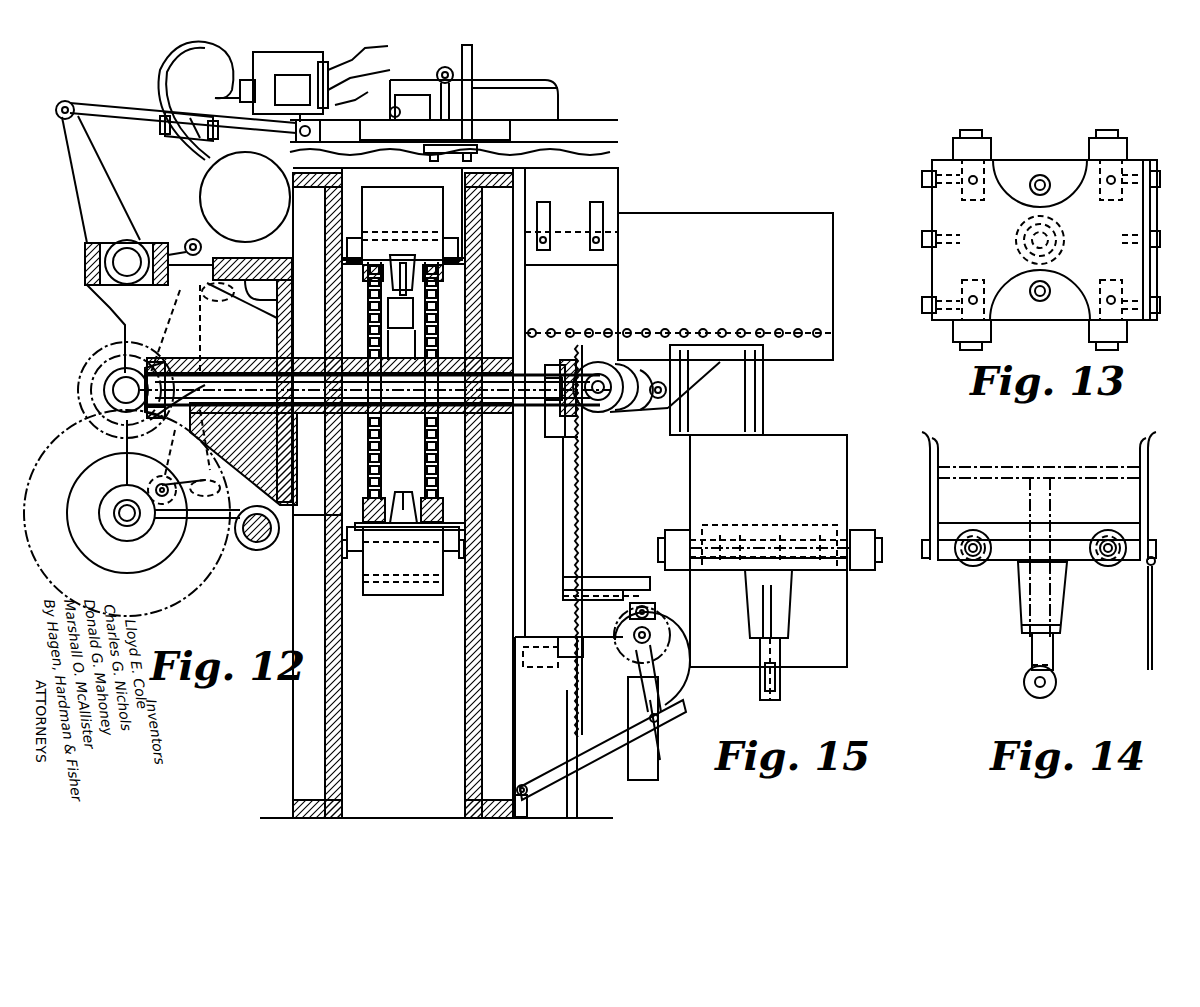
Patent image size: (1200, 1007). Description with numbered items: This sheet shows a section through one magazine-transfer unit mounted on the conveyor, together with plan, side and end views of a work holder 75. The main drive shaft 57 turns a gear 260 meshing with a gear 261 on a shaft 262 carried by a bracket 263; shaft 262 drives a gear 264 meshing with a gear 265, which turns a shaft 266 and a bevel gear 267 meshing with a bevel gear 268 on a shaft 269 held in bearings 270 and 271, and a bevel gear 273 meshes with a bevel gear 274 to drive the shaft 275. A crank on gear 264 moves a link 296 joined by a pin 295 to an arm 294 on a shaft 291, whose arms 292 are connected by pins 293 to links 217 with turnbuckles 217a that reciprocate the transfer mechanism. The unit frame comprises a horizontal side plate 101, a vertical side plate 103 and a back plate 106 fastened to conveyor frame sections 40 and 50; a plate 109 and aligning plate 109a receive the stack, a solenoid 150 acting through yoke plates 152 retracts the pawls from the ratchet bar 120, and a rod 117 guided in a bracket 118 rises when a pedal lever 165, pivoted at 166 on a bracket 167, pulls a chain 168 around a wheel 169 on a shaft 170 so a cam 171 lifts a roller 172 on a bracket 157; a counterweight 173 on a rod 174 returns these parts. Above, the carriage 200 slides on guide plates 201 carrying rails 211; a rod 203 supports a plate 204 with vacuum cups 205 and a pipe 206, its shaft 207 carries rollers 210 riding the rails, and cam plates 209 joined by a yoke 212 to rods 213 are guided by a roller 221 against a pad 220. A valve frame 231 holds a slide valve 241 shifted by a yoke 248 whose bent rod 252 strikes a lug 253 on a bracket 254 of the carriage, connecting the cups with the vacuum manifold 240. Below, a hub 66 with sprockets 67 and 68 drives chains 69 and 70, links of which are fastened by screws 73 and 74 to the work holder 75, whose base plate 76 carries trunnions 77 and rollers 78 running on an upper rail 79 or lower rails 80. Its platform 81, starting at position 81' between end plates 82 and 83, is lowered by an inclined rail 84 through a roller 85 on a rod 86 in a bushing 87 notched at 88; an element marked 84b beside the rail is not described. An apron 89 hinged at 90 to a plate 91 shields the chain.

In FIG. 12, the pin 293 is at (65, 101).
In FIG. 12, the link 217 is at (133, 110).
In FIG. 12, the turnbuckle 217a is at (192, 113).
In FIG. 12, the frame 231 is at (262, 55).
In FIG. 12, the yoke 248 is at (303, 45).
In FIG. 12, the slide valve 241 is at (276, 67).
In FIG. 12, the bent rod 252 is at (365, 60).
In FIG. 12, the lug 253 is at (365, 80).
In FIG. 12, the bracket 254 is at (390, 112).
In FIG. 12, the roller 221 is at (418, 104).
In FIG. 12, the rollers 210 is at (445, 67).
In FIG. 12, the pipe 206 is at (472, 55).
In FIG. 12, the cam plates 209 is at (475, 86).
In FIG. 12, the rails 211 is at (558, 88).
In FIG. 12, the rod 203 is at (470, 96).
In FIG. 12, the carriage plate 200 is at (500, 120).
In FIG. 12, the guide plates 201 is at (590, 122).
In FIG. 12, the pad 220 is at (395, 129).
In FIG. 12, the rods 213 is at (350, 140).
In FIG. 12, the vacuum cups 205 is at (425, 150).
In FIG. 12, the plate 204 is at (477, 149).
In FIG. 12, the back plate 106 is at (522, 190).
In FIG. 12, the side plate 101 is at (610, 175).
In FIG. 12, the arm 292 is at (75, 170).
In FIG. 12, the vacuum manifold 240 is at (200, 178).
In FIG. 12, the arm 294 is at (185, 240).
In FIG. 12, the pin 295 is at (201, 247).
In FIG. 12, the shaft 291 is at (118, 260).
In FIG. 12, the bracket 263 is at (103, 300).
In FIG. 12, the link 296 is at (220, 292).
In FIG. 12, the shaft 269 is at (240, 330).
In FIG. 12, the bevel gear 268 is at (158, 355).
In FIG. 12, the gear 265 is at (88, 342).
In FIG. 12, the bearing 270 is at (210, 358).
In FIG. 12, the housing 84b is at (350, 305).
In FIG. 12, the work holder 75 is at (415, 190).
In FIG. 13, the work holder 75 is at (1060, 106).
In FIG. 12, the roller 78 is at (355, 238).
In FIG. 15, the roller 78 is at (866, 578).
In FIG. 13, the roller 78 is at (953, 146).
In FIG. 14, the roller 78 is at (960, 565).
In FIG. 12, the conveyor chain 69 is at (374, 247).
In FIG. 12, the conveyor chain 70 is at (424, 247).
In FIG. 12, the upper rail 79 is at (415, 300).
In FIG. 12, the rail 84 is at (415, 315).
In FIG. 12, the sprocket 68 is at (438, 338).
In FIG. 12, the side plate 103 is at (608, 272).
In FIG. 12, the bevel gear 273 is at (585, 360).
In FIG. 12, the shaft 275 is at (605, 372).
In FIG. 12, the plate 109a is at (795, 213).
In FIG. 12, the plate 109 is at (700, 385).
In FIG. 12, the solenoid 150 is at (763, 392).
In FIG. 12, the yoke plates 152 is at (645, 410).
In FIG. 12, the bevel gear 274 is at (606, 412).
In FIG. 12, the bevel gear 267 is at (90, 378).
In FIG. 12, the shaft 266 is at (112, 390).
In FIG. 12, the gear 264 is at (85, 475).
In FIG. 12, the gear 261 is at (218, 485).
In FIG. 12, the shaft 207 is at (170, 488).
In FIG. 12, the shaft 262 is at (120, 518).
In FIG. 12, the gear 260 is at (238, 545).
In FIG. 12, the main drive shaft 57 is at (257, 551).
In FIG. 12, the bearing 271 is at (309, 453).
In FIG. 12, the hub 66 is at (352, 437).
In FIG. 12, the sprocket 67 is at (368, 476).
In FIG. 12, the yoke 212 is at (470, 420).
In FIG. 12, the lower rails 80 is at (342, 567).
In FIG. 12, the ratchet bar 120 is at (584, 488).
In FIG. 12, the bracket 157 is at (633, 577).
In FIG. 12, the roller 172 is at (648, 608).
In FIG. 12, the wheel 169 is at (656, 622).
In FIG. 12, the shaft 170 is at (635, 637).
In FIG. 12, the rod 174 is at (650, 672).
In FIG. 12, the cam 171 is at (672, 683).
In FIG. 12, the rod 117 is at (568, 691).
In FIG. 12, the bracket 118 is at (608, 665).
In FIG. 12, the chain 168 is at (650, 722).
In FIG. 12, the frame section 40 is at (520, 728).
In FIG. 12, the pedal lever 165 is at (611, 752).
In FIG. 12, the pivot 166 is at (528, 792).
In FIG. 12, the bracket 167 is at (527, 814).
In FIG. 12, the counterweight 173 is at (650, 780).
In FIG. 12, the frame section 50 is at (325, 752).
In FIG. 15, the end plate 82 is at (847, 478).
In FIG. 13, the end plate 82 is at (932, 216).
In FIG. 14, the end plate 82 is at (930, 490).
In FIG. 15, the platform 81 is at (811, 513).
In FIG. 13, the platform 81 is at (1001, 322).
In FIG. 14, the platform 81 is at (1093, 512).
In FIG. 15, the trunnion 77 is at (879, 546).
In FIG. 13, the trunnion 77 is at (975, 125).
In FIG. 14, the trunnion 77 is at (973, 530).
In FIG. 15, the bushing 87 is at (795, 575).
In FIG. 14, the bushing 87 is at (1065, 572).
In FIG. 15, the bottom plate 76 is at (742, 572).
In FIG. 13, the bottom plate 76 is at (1063, 170).
In FIG. 14, the bottom plate 76 is at (1000, 562).
In FIG. 15, the notch 88 is at (775, 602).
In FIG. 14, the notch 88 is at (1025, 585).
In FIG. 15, the apron 89 is at (847, 617).
In FIG. 14, the apron 89 is at (1153, 617).
In FIG. 15, the rod 86 is at (781, 648).
In FIG. 14, the rod 86 is at (1052, 617).
In FIG. 15, the roller 85 is at (776, 676).
In FIG. 14, the roller 85 is at (1055, 678).
In FIG. 13, the screw 74 is at (1040, 175).
In FIG. 13, the end plate 83 is at (1143, 263).
In FIG. 14, the end plate 83 is at (1142, 462).
In FIG. 13, the plate 91 is at (1152, 276).
In FIG. 14, the plate 91 is at (1155, 540).
In FIG. 13, the screw 73 is at (1040, 302).
In FIG. 14, the platform position 81' is at (998, 456).
In FIG. 14, the hinge 90 is at (1155, 562).